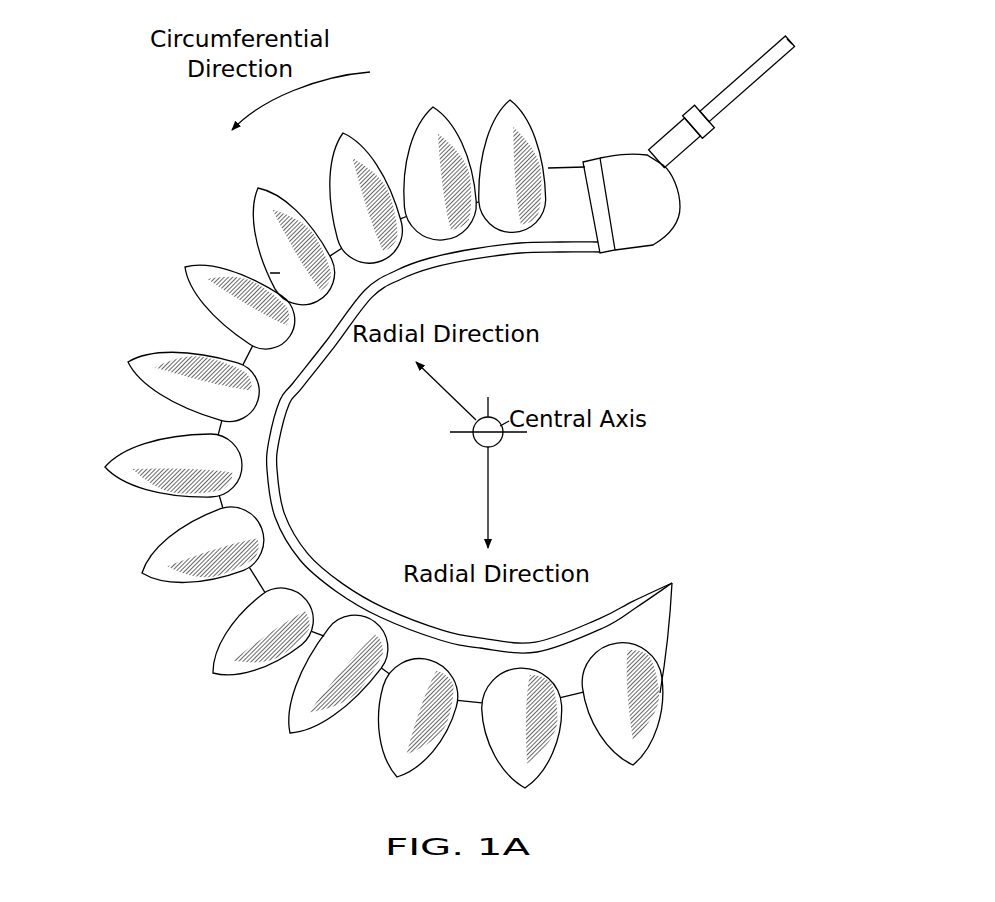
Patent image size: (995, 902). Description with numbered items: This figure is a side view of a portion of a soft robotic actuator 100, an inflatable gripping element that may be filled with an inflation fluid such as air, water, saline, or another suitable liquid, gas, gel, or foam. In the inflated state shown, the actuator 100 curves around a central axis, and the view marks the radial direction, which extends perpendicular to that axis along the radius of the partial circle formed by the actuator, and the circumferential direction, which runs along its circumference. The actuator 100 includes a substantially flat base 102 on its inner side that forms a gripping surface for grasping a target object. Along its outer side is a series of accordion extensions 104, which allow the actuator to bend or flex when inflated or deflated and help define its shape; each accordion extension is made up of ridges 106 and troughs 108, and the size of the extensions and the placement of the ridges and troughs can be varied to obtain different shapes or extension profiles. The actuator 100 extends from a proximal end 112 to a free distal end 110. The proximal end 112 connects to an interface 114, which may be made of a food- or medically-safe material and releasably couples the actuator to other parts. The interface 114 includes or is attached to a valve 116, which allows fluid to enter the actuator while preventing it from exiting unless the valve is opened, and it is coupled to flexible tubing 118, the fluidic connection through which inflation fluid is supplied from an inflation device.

The soft robotic actuator 100 is at (274, 539).
The base 102 is at (483, 250).
The accordion extensions 104 is at (202, 268).
The ridge 106 is at (136, 363).
The trough 108 is at (190, 428).
The distal end 110 is at (700, 565).
The proximal end 112 is at (692, 251).
The interface 114 is at (607, 158).
The valve 116 is at (688, 152).
The flexible tubing 118 is at (758, 59).